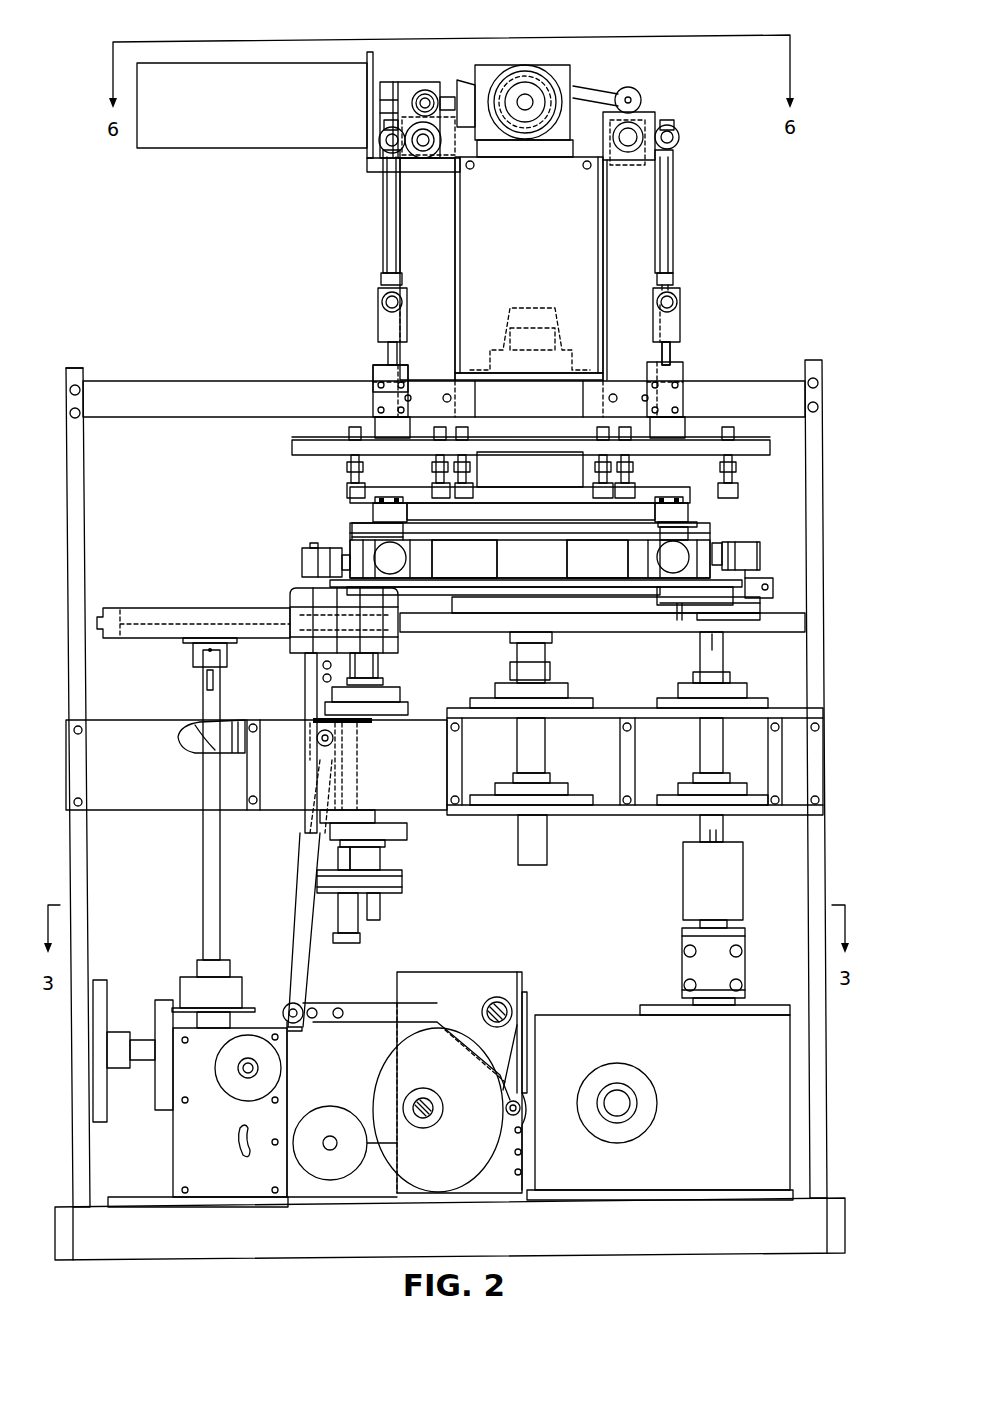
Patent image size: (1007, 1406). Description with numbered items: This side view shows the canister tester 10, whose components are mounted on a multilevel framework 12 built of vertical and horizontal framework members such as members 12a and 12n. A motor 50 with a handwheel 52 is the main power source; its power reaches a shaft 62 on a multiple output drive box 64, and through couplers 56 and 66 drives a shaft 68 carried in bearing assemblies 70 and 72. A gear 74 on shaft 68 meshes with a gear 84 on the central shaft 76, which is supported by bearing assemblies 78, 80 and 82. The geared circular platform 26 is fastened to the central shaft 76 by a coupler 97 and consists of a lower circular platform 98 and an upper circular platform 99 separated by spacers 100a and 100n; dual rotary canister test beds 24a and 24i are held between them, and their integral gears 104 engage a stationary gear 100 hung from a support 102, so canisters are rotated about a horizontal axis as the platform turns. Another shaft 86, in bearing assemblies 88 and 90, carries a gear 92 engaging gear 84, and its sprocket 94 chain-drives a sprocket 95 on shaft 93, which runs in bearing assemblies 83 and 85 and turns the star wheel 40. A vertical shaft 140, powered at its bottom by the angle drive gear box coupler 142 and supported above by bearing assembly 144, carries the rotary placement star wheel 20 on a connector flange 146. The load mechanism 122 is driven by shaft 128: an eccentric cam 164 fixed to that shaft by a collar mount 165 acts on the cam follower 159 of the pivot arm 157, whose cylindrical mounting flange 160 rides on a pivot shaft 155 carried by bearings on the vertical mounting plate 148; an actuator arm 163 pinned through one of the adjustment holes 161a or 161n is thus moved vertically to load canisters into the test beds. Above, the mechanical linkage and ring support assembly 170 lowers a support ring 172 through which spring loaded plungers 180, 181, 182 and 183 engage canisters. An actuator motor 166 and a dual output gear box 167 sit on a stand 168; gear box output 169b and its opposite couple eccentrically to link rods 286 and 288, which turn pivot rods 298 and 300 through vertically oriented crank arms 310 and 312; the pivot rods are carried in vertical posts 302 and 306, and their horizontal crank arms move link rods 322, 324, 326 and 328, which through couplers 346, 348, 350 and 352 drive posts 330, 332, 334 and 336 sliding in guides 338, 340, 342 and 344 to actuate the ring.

The canister tester 10 is at (152, 212).
The multilevel framework 12 is at (788, 370).
The framework member 12a is at (100, 384).
The framework member 12n is at (820, 1187).
The rotary placement star wheel 20 is at (109, 608).
The dual rotary canister test bed 24a is at (302, 562).
The dual rotary canister test bed 24i is at (735, 542).
The geared circular platform 26 is at (282, 541).
The star wheel 40 is at (300, 597).
The motor 50 is at (163, 1003).
The handwheel 52 is at (98, 983).
The coupler 56 is at (737, 970).
The shaft 62 is at (618, 1107).
The multiple output drive box 64 is at (587, 1030).
The coupler 66 is at (737, 883).
The shaft 68 is at (707, 763).
The bearing assembly 70 is at (695, 793).
The bearing assembly 72 is at (733, 690).
The gear 74 is at (752, 623).
The central shaft 76 is at (537, 838).
The bearing assembly 78 is at (555, 787).
The bearing assembly 80 is at (558, 690).
The bearing assembly 82 is at (505, 312).
The bearing assembly 83 is at (362, 810).
The gear 84 is at (633, 622).
The bearing assembly 85 is at (360, 722).
The shaft 86 is at (372, 858).
The bearing assembly 88 is at (385, 700).
The bearing assembly 90 is at (400, 820).
The gear 92 is at (385, 655).
The shaft 93 is at (347, 855).
The sprocket 94 is at (395, 880).
The sprocket 95 is at (353, 882).
The coupler 97 is at (597, 590).
The lower circular platform 98 is at (448, 588).
The upper circular platform 99 is at (448, 535).
The stationary gear 100 is at (635, 508).
The spacer 100a is at (423, 567).
The spacer 100n is at (648, 548).
The support 102 is at (506, 436).
The gear 104 is at (370, 513).
The load mechanism 122 is at (288, 686).
The shaft 128 is at (438, 1115).
The vertical shaft 140 is at (203, 870).
The angle drive gear box coupler 142 is at (195, 983).
The bearing assembly 144 is at (200, 737).
The connector flange 146 is at (193, 657).
The vertical mounting plate 148 is at (445, 972).
The pivot shaft 155 is at (497, 997).
The pivot arm 157 is at (413, 1003).
The cam follower 159 is at (520, 1143).
The cylindrical mounting flange 160 is at (507, 1007).
The adjustment hole 161a is at (300, 1003).
The adjustment hole 161n is at (340, 1020).
The actuator arm 163 is at (290, 913).
The eccentric cam 164 is at (378, 1068).
The collar mount 165 is at (415, 1128).
The actuator motor 166 is at (232, 117).
The dual output gear box 167 is at (573, 70).
The stand 168 is at (507, 267).
The gear box output 169b is at (497, 78).
The mechanical linkage and ring support assembly 170 is at (705, 231).
The support ring 172 is at (292, 443).
The spring loaded plunger 180 is at (637, 485).
The spring loaded plunger 181 is at (604, 490).
The spring loaded plunger 182 is at (475, 480).
The spring loaded plunger 183 is at (435, 490).
The link rod 286 is at (585, 92).
The link rod 288 is at (470, 95).
The pivot rod 298 is at (622, 152).
The pivot rod 300 is at (423, 158).
The vertical post 302 is at (612, 237).
The vertical post 306 is at (407, 270).
The vertically oriented crank arm 310 is at (641, 95).
The vertically oriented crank arm 312 is at (450, 170).
The link rod 322 is at (672, 208).
The link rod 324 is at (680, 185).
The link rod 326 is at (387, 223).
The link rod 328 is at (385, 200).
The post 330 is at (665, 348).
The post 332 is at (667, 352).
The post 334 is at (388, 352).
The post 336 is at (388, 365).
The guide 338 is at (683, 385).
The guide 340 is at (687, 400).
The guide 342 is at (375, 392).
The guide 344 is at (372, 400).
The coupler 346 is at (680, 300).
The coupler 348 is at (680, 310).
The coupler 350 is at (382, 312).
The coupler 352 is at (385, 330).